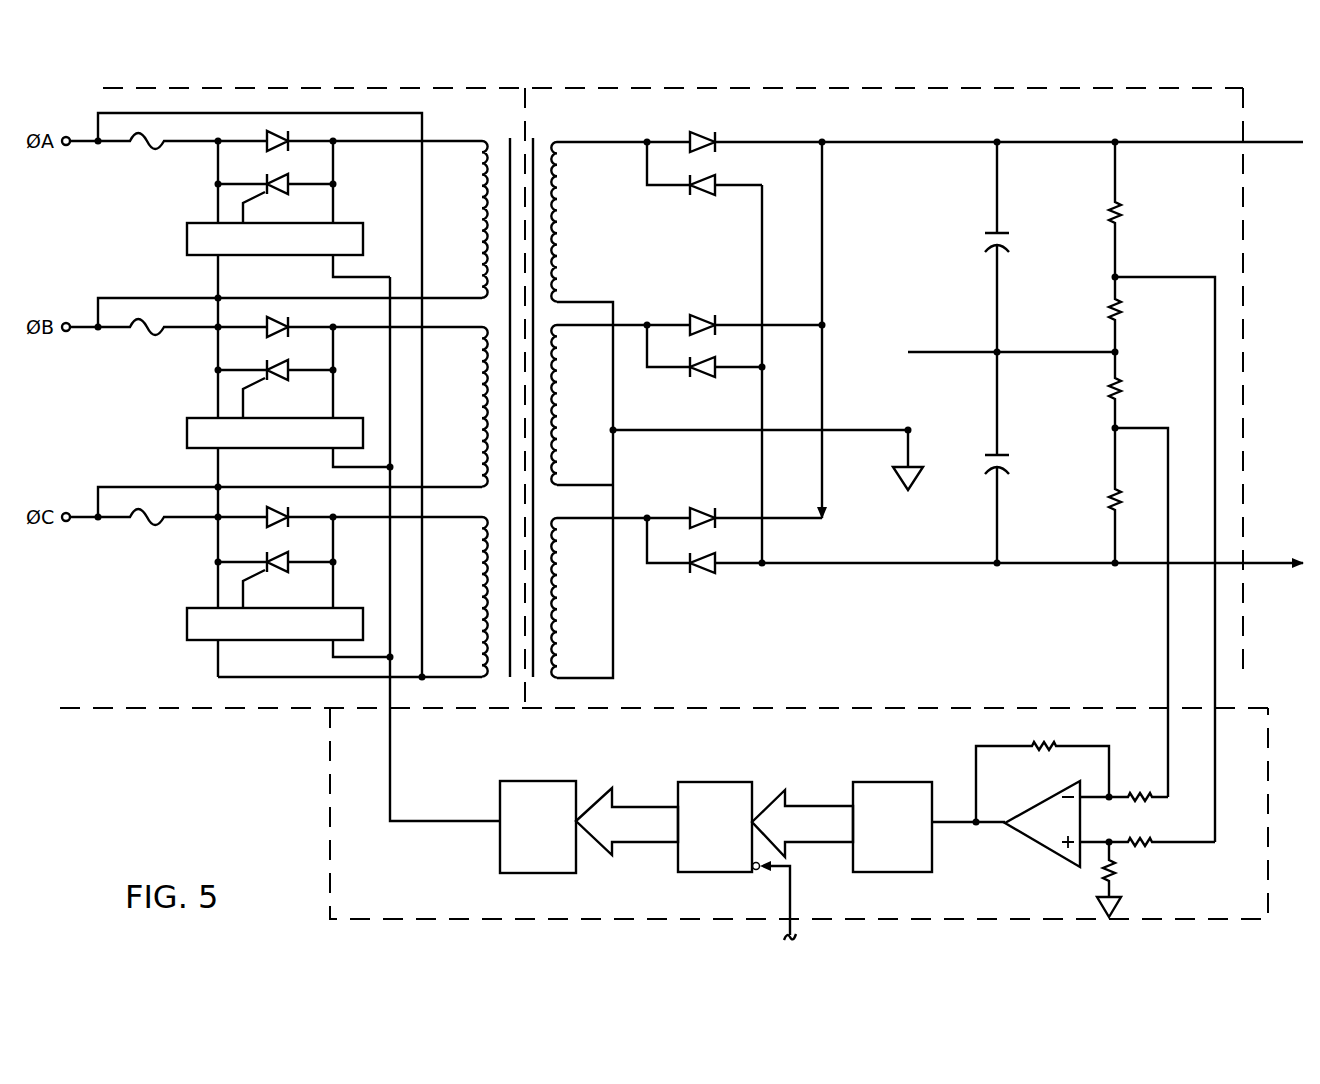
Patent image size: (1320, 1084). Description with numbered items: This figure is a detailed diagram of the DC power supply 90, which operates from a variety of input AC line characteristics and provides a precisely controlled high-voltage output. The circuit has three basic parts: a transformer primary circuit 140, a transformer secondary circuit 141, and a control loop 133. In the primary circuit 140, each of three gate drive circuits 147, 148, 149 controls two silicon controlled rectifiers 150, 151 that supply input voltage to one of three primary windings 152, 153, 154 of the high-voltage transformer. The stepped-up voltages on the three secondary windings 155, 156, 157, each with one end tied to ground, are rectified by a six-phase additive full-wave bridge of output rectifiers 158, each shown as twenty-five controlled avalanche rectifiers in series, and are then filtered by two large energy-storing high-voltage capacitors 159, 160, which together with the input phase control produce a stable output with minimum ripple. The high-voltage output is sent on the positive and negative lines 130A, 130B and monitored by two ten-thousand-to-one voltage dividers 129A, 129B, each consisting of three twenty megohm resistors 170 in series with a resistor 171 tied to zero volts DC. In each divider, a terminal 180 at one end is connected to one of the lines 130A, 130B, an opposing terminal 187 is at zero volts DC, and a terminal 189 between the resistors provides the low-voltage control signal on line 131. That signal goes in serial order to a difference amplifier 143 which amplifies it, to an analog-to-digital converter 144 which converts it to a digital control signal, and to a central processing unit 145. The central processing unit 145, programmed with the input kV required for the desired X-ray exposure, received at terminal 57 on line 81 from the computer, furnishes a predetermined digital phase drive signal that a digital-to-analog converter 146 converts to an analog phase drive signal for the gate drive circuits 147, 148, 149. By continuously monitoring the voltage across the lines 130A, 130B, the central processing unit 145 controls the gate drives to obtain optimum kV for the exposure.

The DC power supply 90 is at (296, 765).
The transformer primary circuit 140 is at (198, 708).
The transformer secondary circuit 141 is at (1243, 657).
The control loop 133 is at (648, 920).
The silicon controlled rectifier 151 is at (273, 134).
The silicon controlled rectifier 150 is at (278, 192).
The gate drive circuit 147 is at (345, 223).
The gate drive circuit 148 is at (345, 418).
The gate drive circuit 149 is at (345, 608).
The primary winding 152 is at (482, 198).
The primary winding 153 is at (482, 398).
The primary winding 154 is at (482, 598).
The secondary winding 155 is at (558, 224).
The secondary winding 156 is at (558, 416).
The secondary winding 157 is at (556, 630).
The output rectifier 158 is at (705, 130).
The high-voltage capacitor 159 is at (1004, 231).
The high-voltage capacitor 160 is at (1003, 456).
The terminal 187 is at (1116, 352).
The resistor 170 is at (1118, 213).
The resistor 171 is at (1118, 309).
The terminal 189 is at (1117, 277).
The terminal 180 is at (1117, 142).
The voltage divider 129A is at (1098, 196).
The voltage divider 129B is at (1097, 509).
The output line 130A is at (1265, 144).
The output line 130B is at (1252, 563).
The digital-to-analog converter 146 is at (515, 873).
The central processing unit 145 is at (715, 872).
The analog-to-digital converter 144 is at (905, 872).
The difference amplifier 143 is at (1011, 850).
The line 131 is at (1213, 788).
The terminal 57 is at (771, 898).
The line 81 is at (795, 932).